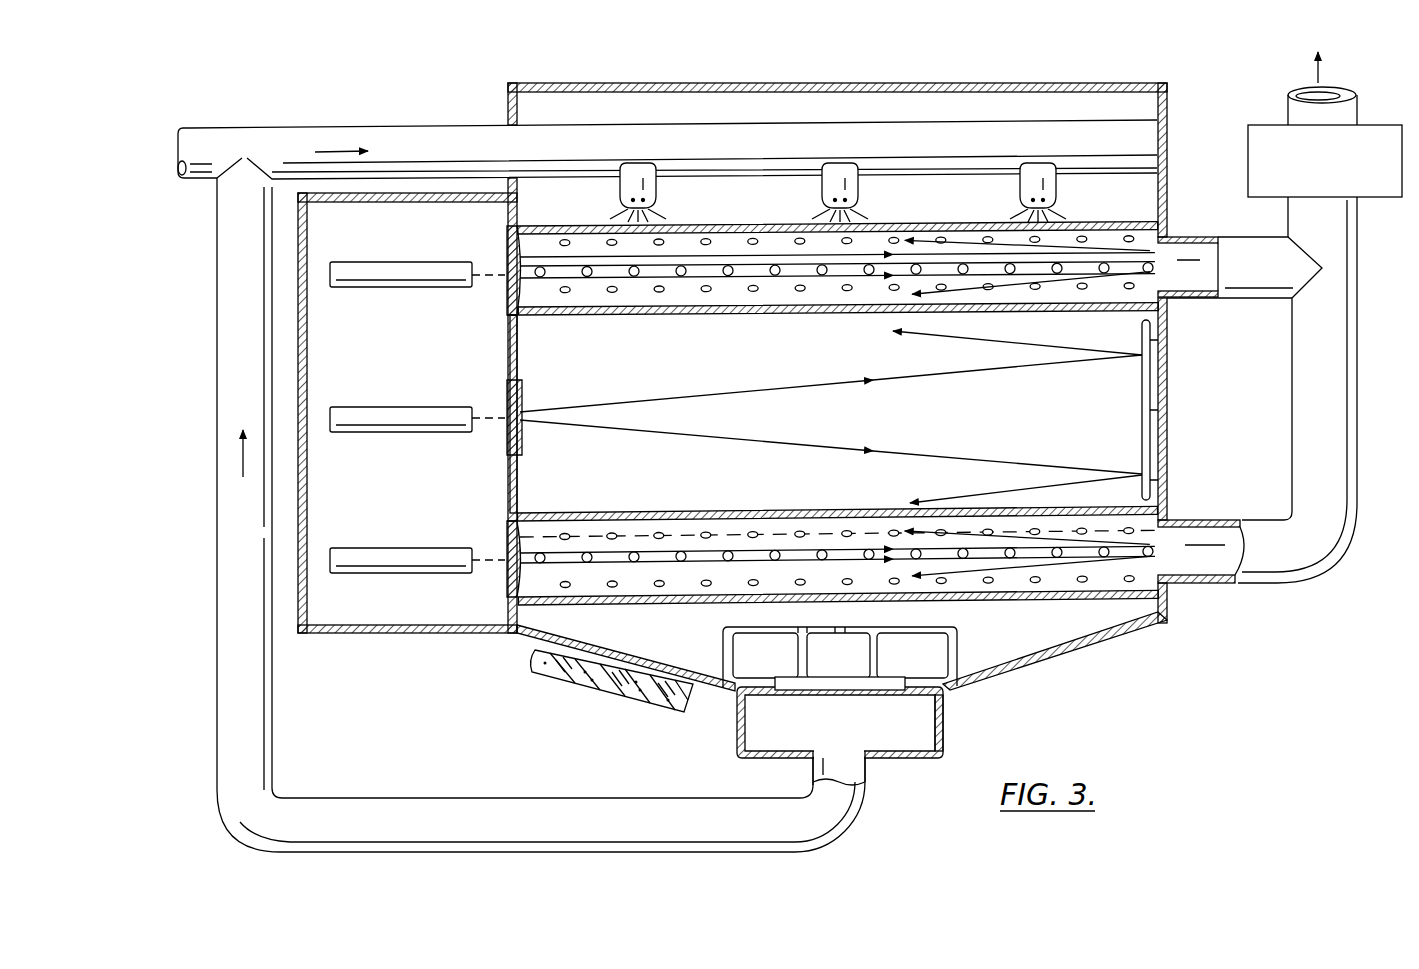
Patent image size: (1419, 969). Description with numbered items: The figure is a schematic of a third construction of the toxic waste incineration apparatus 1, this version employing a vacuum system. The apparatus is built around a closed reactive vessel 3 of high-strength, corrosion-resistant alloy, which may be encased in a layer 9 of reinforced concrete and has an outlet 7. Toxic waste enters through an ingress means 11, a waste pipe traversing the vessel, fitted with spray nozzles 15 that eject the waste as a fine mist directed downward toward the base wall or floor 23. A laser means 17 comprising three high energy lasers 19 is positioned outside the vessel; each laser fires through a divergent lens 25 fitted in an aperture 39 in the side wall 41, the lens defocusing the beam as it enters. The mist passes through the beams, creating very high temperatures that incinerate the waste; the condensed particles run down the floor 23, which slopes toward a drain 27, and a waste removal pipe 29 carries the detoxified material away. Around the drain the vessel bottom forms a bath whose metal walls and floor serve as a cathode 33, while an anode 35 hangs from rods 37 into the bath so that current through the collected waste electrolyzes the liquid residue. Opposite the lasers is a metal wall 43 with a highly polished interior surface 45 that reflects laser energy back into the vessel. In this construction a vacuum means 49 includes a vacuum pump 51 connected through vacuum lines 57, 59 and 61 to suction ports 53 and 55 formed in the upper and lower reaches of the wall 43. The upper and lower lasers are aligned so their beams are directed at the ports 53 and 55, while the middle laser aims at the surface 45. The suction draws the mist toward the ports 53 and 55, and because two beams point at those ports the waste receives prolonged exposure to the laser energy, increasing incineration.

The apparatus 1 is at (195, 663).
The reactive vessel 3 is at (831, 431).
The outlet 7 is at (714, 734).
The layer of reinforced concrete 9 is at (550, 682).
The ingress means 11 is at (805, 116).
The spray nozzle 15 is at (822, 184).
The laser means 17 is at (335, 340).
The high energy laser 19 is at (398, 262).
The base wall or floor 23 is at (1018, 662).
The divergent lens 25 is at (522, 400).
The drain 27 is at (790, 722).
The waste removal pipe 29 is at (498, 805).
The cathode 33 is at (890, 750).
The anode 35 is at (837, 688).
The rods 37 is at (953, 633).
The apertures 39 is at (507, 305).
The side wall 41 is at (517, 485).
The metal wall 43 is at (1160, 380).
The polished interior surface 45 is at (1142, 392).
The vacuum means 49 is at (1243, 204).
The vacuum pump 51 is at (1248, 148).
The upper suction port 53 is at (1143, 285).
The lower suction port 55 is at (1145, 578).
The vacuum line 57 is at (1298, 405).
The vacuum line 59 is at (1241, 283).
The vacuum line 61 is at (1212, 540).